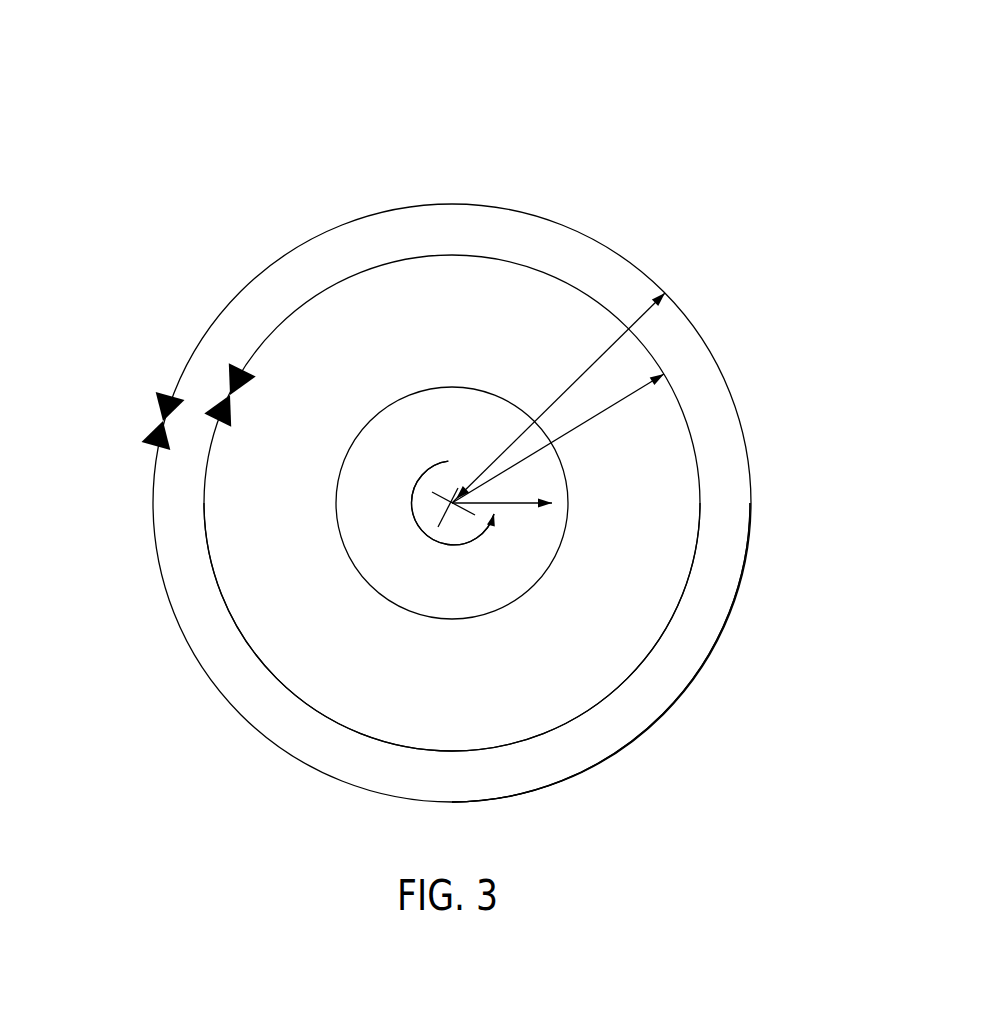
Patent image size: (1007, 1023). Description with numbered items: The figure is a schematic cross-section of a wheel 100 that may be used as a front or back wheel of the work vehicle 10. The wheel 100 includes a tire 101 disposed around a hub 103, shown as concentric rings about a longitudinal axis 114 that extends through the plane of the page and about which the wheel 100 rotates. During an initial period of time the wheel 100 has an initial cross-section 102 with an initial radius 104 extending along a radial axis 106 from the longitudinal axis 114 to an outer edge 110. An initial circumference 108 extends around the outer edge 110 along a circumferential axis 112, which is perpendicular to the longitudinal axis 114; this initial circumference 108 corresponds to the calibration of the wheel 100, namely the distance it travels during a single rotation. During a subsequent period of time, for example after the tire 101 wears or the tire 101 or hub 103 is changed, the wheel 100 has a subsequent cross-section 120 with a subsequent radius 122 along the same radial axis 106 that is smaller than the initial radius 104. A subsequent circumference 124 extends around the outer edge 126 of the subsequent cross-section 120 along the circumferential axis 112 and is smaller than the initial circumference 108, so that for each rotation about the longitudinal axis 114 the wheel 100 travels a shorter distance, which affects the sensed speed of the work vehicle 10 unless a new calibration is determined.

The work vehicle 10 is at (600, 65).
The wheel 100 is at (535, 158).
The tire 101 is at (708, 563).
The initial cross-section 102 is at (615, 760).
The hub 103 is at (452, 623).
The initial radius 104 is at (563, 394).
The radial axis 106 is at (517, 507).
The initial circumference 108 is at (157, 435).
The outer edge 110 is at (152, 523).
The circumferential axis 112 is at (450, 547).
The longitudinal axis 114 is at (410, 502).
The subsequent cross-section 120 is at (532, 740).
The subsequent radius 122 is at (590, 420).
The subsequent circumference 124 is at (225, 376).
The outer edge 126 is at (207, 567).